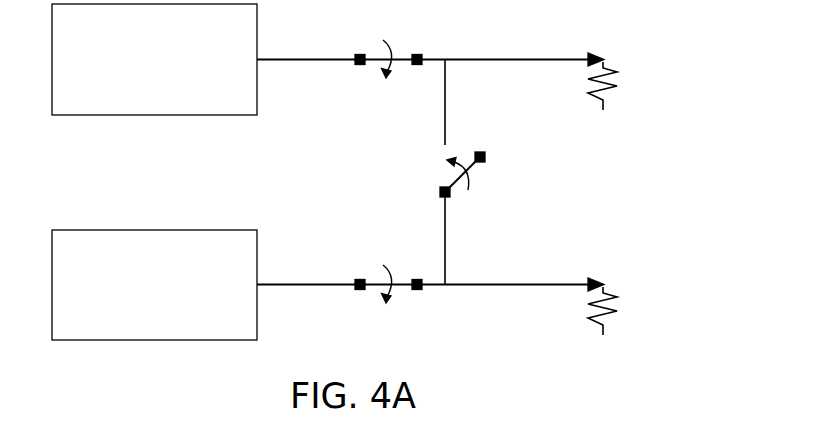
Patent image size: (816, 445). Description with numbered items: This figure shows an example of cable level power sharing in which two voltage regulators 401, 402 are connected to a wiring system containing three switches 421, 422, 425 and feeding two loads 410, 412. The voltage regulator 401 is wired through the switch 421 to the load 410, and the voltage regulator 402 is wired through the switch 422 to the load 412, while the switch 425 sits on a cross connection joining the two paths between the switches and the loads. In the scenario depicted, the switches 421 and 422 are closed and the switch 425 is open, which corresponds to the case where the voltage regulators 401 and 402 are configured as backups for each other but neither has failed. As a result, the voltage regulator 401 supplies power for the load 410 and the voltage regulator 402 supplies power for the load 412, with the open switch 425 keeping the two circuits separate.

The voltage regulator 401 is at (130, 100).
The voltage regulator 402 is at (130, 324).
The load 410 is at (618, 75).
The load 412 is at (618, 300).
The switch 421 is at (378, 61).
The switch 422 is at (378, 286).
The switch 425 is at (452, 192).